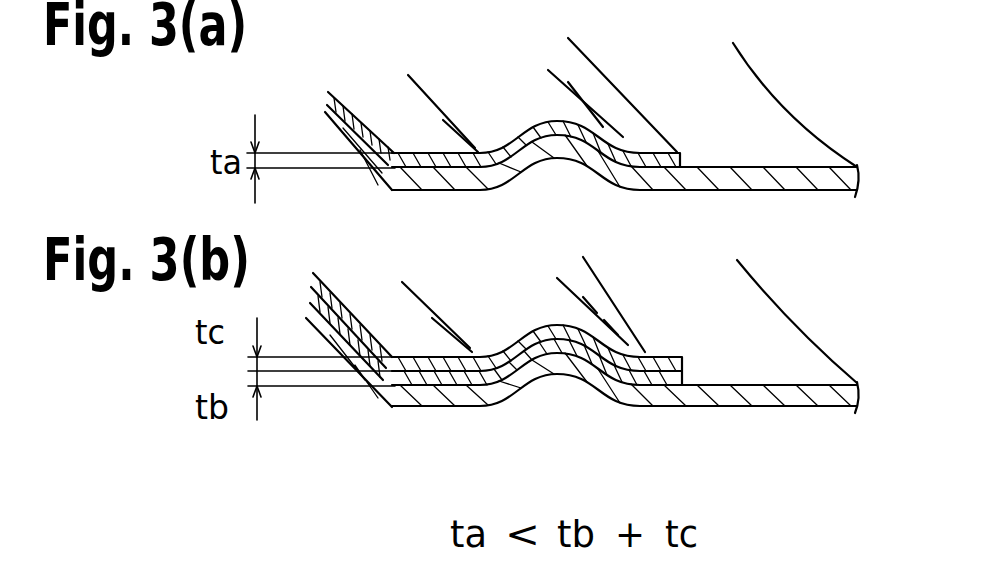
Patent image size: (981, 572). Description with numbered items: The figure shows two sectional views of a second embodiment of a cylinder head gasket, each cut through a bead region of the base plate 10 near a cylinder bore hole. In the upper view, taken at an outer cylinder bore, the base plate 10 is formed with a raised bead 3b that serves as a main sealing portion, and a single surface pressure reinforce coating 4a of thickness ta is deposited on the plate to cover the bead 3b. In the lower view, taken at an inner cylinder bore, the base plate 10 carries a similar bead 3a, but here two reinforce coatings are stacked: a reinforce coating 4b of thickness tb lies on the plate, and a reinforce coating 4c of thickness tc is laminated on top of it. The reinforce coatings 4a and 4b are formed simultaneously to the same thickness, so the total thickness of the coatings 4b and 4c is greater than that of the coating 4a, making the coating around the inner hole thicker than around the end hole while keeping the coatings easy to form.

In FIG. 3A, the base plate 10 is at (667, 190).
In FIG. 3B, the base plate 10 is at (743, 394).
In FIG. 3A, the reinforce coating 4a is at (662, 153).
In FIG. 3A, the bead 3b is at (562, 160).
In FIG. 3B, the reinforce coating 4b is at (683, 378).
In FIG. 3B, the reinforce coating 4c is at (641, 357).
In FIG. 3B, the bead 3a is at (560, 376).